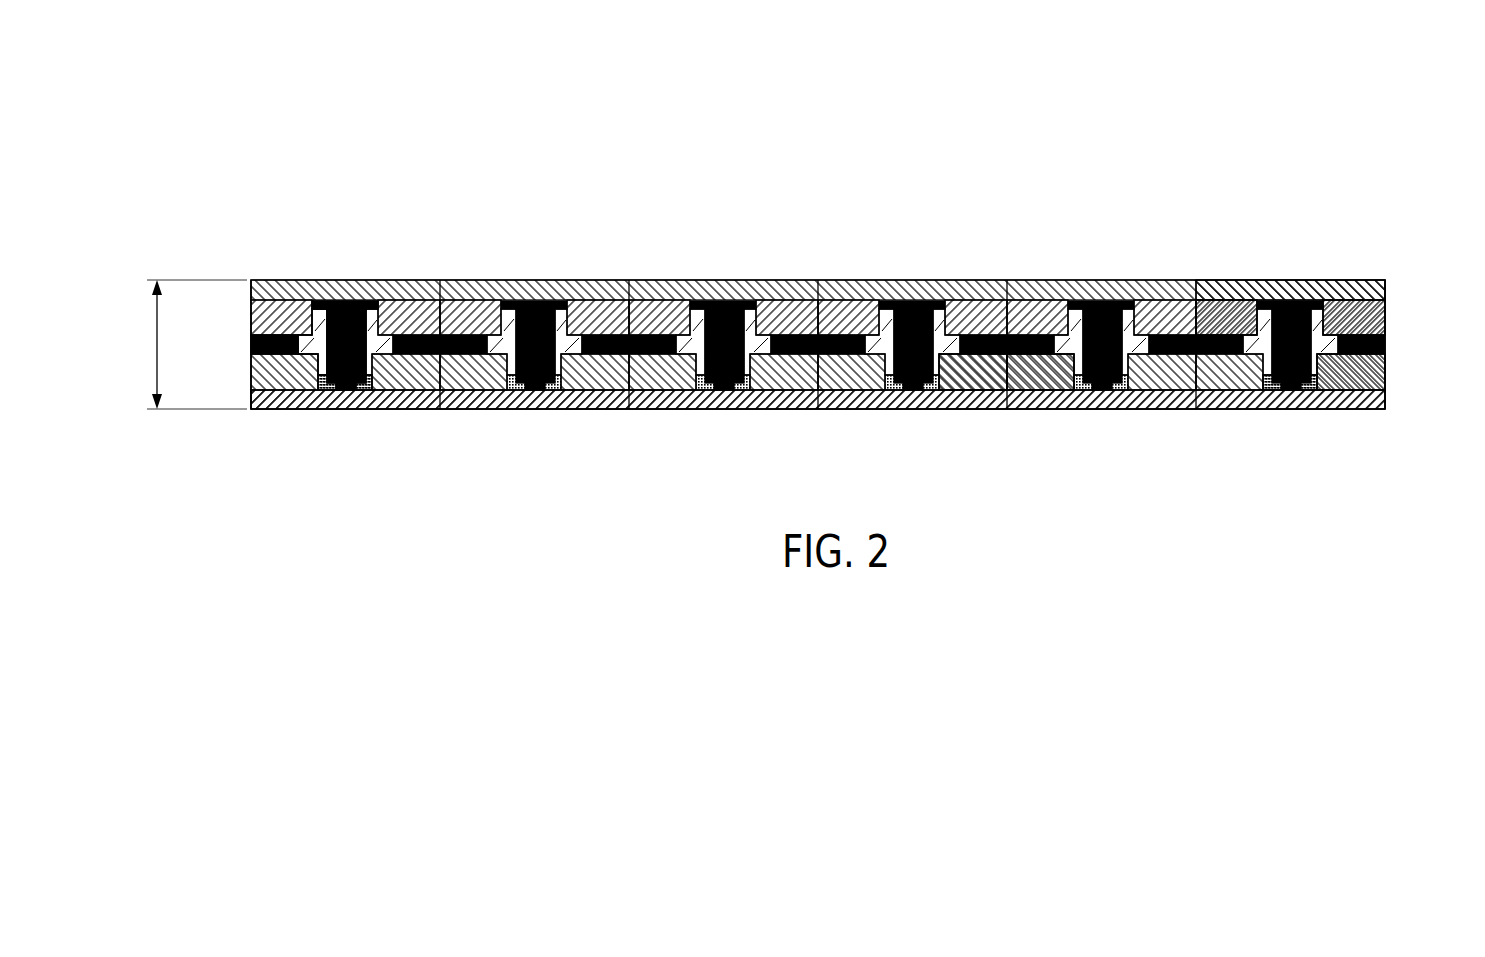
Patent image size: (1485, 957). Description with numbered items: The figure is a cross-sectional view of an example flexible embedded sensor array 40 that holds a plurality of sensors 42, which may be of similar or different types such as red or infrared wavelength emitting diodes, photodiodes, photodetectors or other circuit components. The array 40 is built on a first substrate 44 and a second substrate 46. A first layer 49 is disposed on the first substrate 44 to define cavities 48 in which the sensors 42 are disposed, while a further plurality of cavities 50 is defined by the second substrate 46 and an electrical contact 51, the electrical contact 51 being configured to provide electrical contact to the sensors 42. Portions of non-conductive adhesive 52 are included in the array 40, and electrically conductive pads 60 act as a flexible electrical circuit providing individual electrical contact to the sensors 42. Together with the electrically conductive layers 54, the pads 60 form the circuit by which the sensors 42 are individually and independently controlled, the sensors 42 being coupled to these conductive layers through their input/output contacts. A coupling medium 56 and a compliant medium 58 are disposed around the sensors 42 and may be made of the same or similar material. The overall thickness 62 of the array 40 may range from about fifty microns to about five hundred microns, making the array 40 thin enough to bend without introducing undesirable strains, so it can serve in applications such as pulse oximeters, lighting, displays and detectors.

The flexible embedded sensor array 40 is at (1368, 67).
The sensors 42 is at (1073, 353).
The first substrate 44 is at (1385, 401).
The second substrate 46 is at (1227, 301).
The cavities 48 is at (1312, 391).
The first layer 49 is at (1385, 373).
The cavities 50 is at (1327, 327).
The electrical contact 51 is at (1385, 284).
The non-conductive adhesive 52 is at (388, 392).
The electrically conductive layers 54 is at (350, 302).
The coupling medium 56 is at (251, 343).
The compliant medium 58 is at (307, 335).
The electrically conductive pads 60 is at (345, 392).
The thickness 62 is at (155, 371).